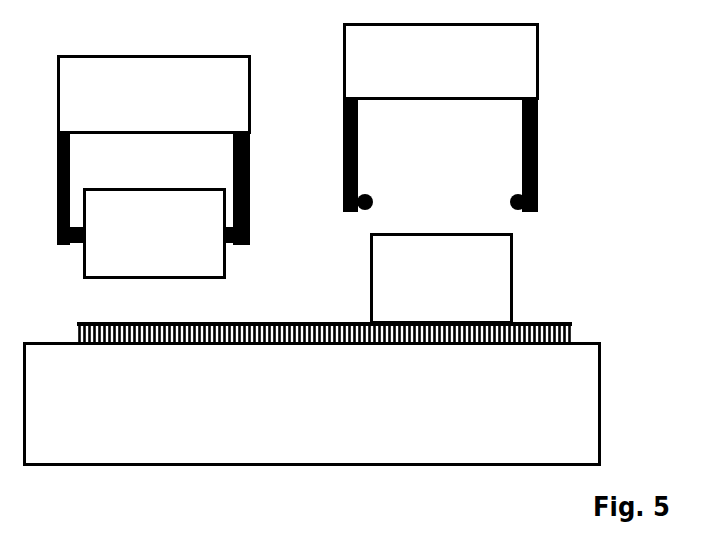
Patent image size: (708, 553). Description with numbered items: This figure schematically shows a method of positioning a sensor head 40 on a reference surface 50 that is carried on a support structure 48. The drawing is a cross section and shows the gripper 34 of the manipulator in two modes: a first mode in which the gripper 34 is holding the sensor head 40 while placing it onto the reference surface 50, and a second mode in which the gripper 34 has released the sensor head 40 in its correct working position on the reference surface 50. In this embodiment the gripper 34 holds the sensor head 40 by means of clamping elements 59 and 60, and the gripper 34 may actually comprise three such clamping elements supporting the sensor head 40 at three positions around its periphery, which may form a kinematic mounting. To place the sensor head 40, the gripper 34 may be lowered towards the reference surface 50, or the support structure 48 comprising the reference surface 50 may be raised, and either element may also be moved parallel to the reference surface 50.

The gripper 34 is at (247, 90).
The clamping element 59 is at (71, 152).
The clamping element 60 is at (232, 162).
The sensor head 40 is at (205, 268).
The reference surface 50 is at (566, 322).
The support structure 48 is at (265, 452).